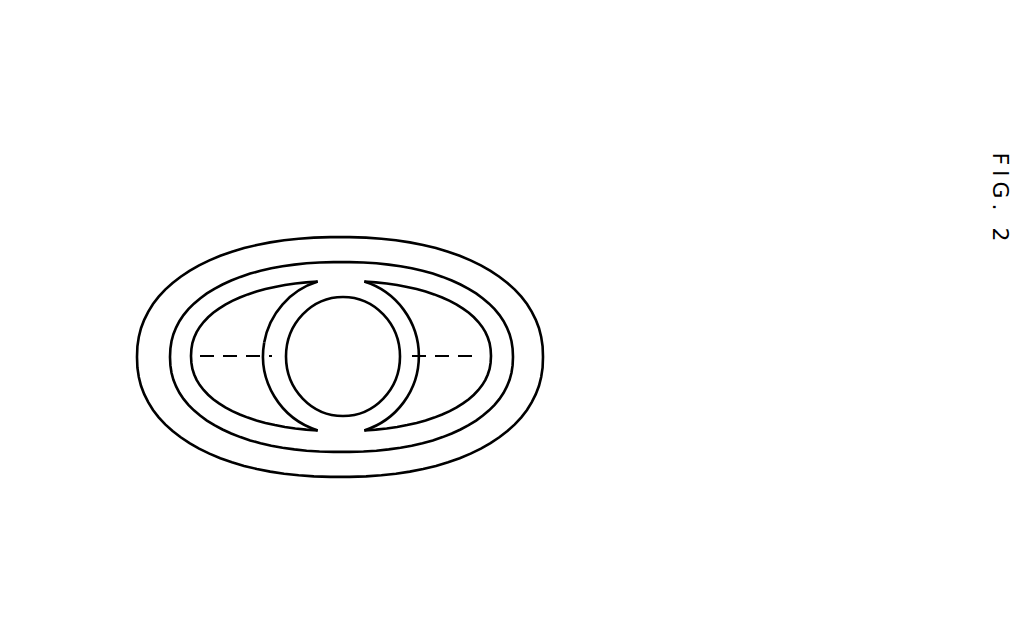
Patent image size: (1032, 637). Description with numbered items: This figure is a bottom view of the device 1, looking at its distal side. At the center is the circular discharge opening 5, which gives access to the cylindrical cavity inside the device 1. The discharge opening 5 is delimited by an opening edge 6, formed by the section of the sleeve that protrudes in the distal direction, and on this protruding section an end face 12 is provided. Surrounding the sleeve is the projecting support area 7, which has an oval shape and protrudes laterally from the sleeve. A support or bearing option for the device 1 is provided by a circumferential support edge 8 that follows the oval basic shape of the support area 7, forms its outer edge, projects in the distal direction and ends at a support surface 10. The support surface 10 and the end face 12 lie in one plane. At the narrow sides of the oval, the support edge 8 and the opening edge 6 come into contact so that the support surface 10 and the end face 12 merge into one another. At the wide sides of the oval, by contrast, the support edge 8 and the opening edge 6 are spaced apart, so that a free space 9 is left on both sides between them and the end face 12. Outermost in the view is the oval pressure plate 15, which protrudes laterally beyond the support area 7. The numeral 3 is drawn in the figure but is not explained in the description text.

The device 1 is at (354, 180).
The central hub 3 is at (312, 362).
The discharge opening 5 is at (350, 371).
The opening edge 6 is at (282, 306).
The support area 7 is at (486, 289).
The support edge 8 is at (170, 352).
The free space 9 is at (233, 384).
The support surface 10 is at (425, 273).
The end face 12 is at (263, 346).
The pressure plate 15 is at (318, 237).